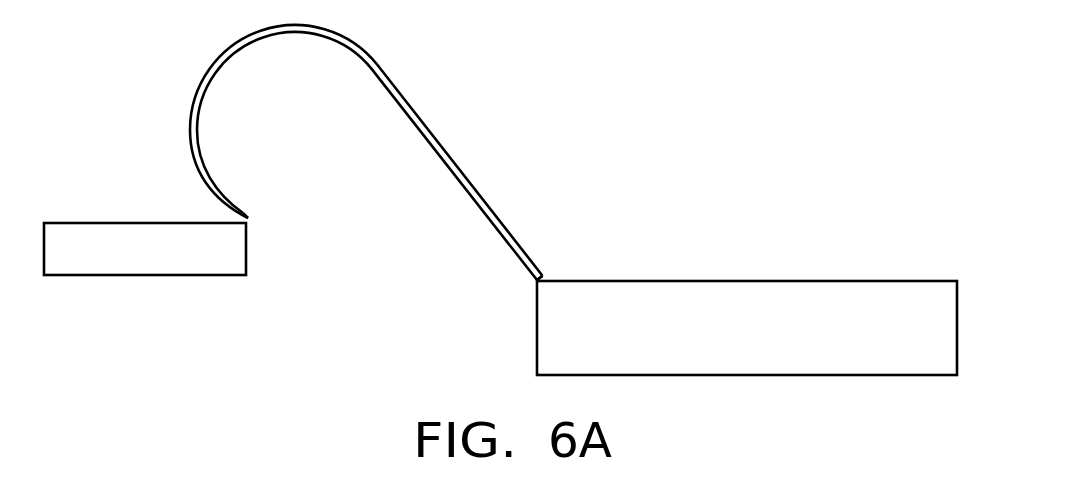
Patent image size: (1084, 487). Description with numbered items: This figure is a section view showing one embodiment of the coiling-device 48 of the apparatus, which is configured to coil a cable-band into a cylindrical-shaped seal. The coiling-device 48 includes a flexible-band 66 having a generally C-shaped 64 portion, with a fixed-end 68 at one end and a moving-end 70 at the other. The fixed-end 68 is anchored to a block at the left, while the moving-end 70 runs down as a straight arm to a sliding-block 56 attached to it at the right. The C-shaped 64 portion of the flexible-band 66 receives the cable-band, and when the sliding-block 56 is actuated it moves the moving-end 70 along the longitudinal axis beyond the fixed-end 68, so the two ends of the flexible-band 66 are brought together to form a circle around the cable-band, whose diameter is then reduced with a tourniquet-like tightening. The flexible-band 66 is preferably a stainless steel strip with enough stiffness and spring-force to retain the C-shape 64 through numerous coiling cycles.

The coiling-device 48 is at (627, 95).
The sliding-block 56 is at (850, 281).
The C-shape 64 is at (316, 145).
The flexible-band 66 is at (426, 126).
The fixed-end 68 is at (246, 224).
The moving-end 70 is at (537, 281).